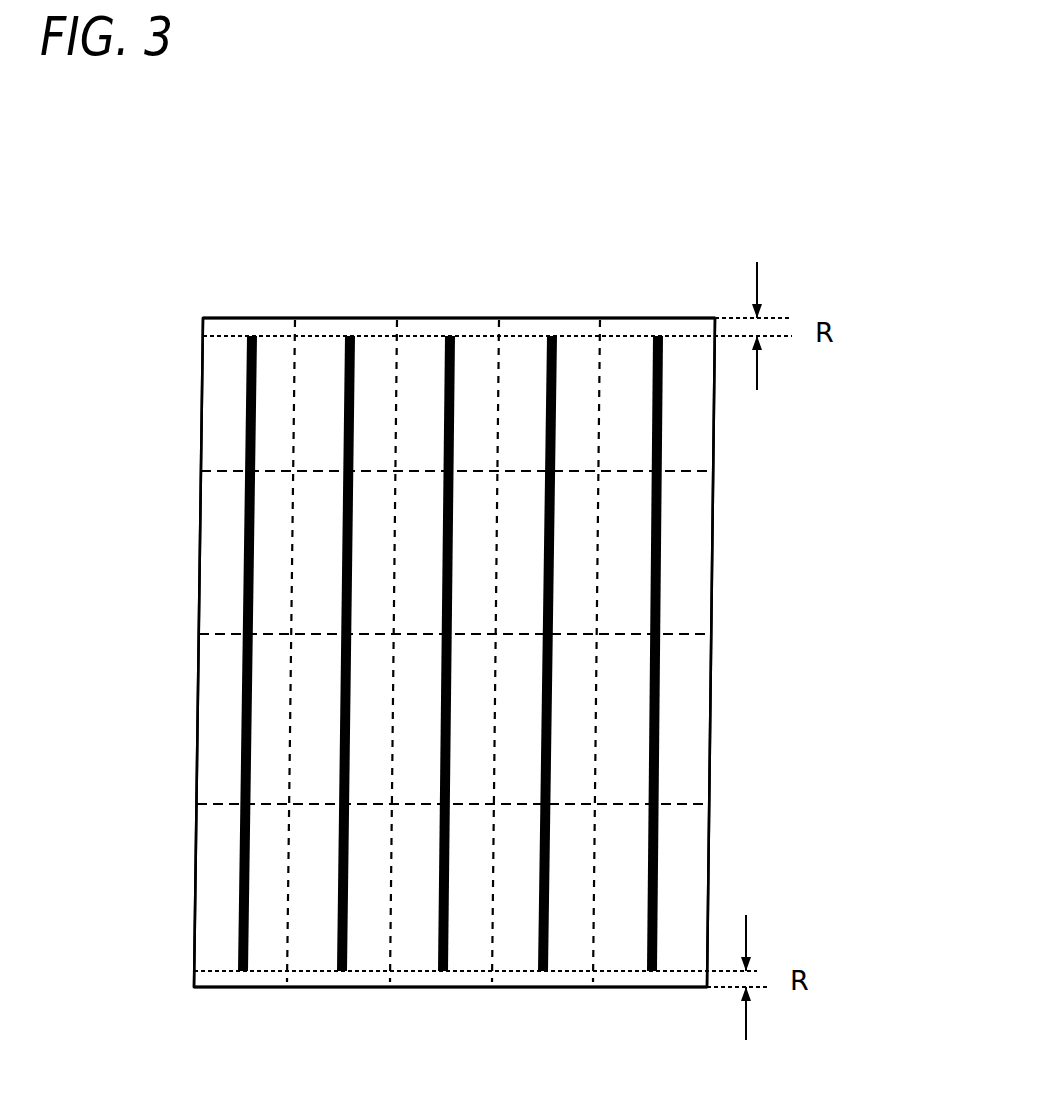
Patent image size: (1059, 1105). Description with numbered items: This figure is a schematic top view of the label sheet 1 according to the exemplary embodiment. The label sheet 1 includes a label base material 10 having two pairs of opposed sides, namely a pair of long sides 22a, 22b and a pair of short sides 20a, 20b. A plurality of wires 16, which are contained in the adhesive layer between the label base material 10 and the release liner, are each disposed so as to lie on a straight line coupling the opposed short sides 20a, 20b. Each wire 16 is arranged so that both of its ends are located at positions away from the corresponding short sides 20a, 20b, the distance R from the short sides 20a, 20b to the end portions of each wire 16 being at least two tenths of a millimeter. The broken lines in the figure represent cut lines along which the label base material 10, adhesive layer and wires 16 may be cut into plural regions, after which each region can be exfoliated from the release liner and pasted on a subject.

The label sheet 1 is at (528, 215).
The label base material 10 is at (695, 722).
The wire 16 is at (660, 573).
The short side 20a is at (352, 317).
The short side 20b is at (570, 988).
The long side 22a is at (200, 428).
The long side 22b is at (709, 885).